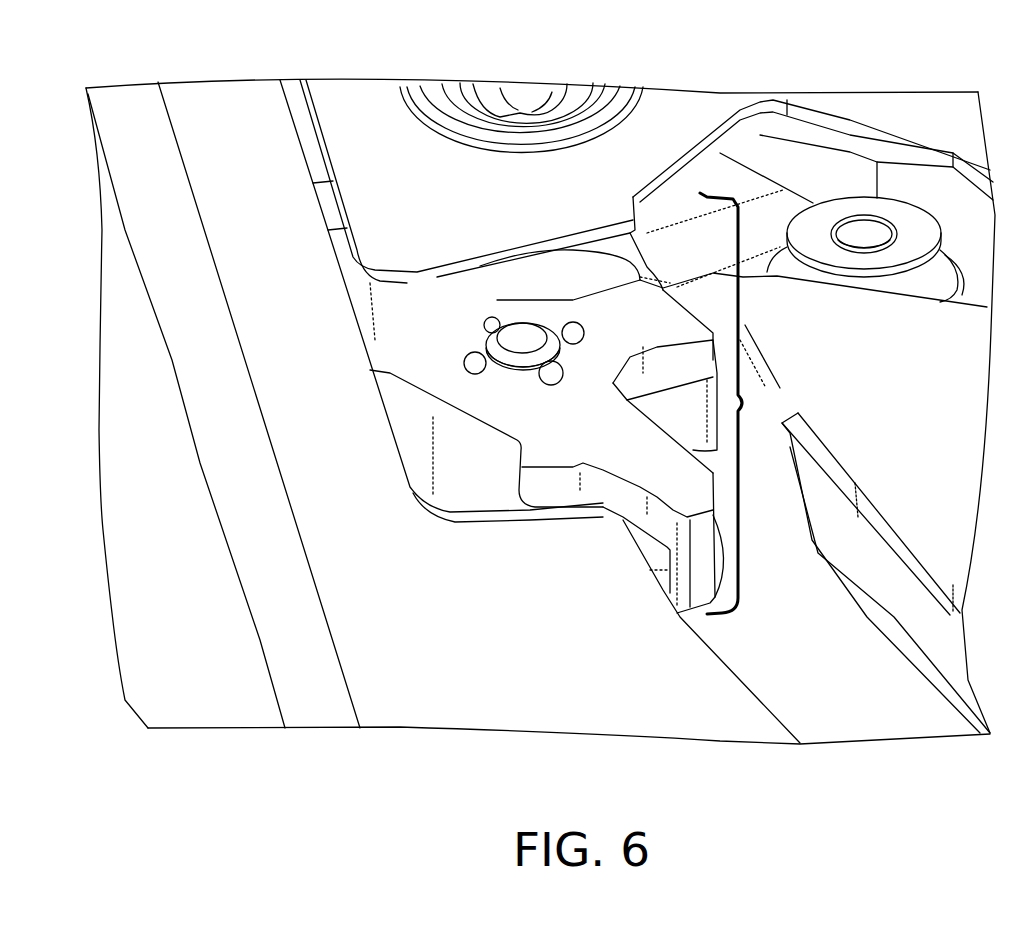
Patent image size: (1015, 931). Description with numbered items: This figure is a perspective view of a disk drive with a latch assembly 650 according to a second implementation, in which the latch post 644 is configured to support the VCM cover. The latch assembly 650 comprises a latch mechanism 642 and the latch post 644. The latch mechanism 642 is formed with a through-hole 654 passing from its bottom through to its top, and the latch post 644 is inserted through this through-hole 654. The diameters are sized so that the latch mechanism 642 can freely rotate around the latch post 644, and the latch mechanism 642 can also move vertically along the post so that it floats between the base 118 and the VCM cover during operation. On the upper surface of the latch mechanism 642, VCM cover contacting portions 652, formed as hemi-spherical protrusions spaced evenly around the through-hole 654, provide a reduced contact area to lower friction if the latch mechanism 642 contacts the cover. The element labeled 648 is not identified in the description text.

The base 118 is at (517, 652).
The latch mechanism 642 is at (453, 393).
The latch post 644 is at (528, 340).
The pin boss 648 is at (517, 358).
The latch assembly 650 is at (745, 403).
The VCM cover contacting portions 652 is at (553, 378).
The through-hole 654 is at (560, 360).